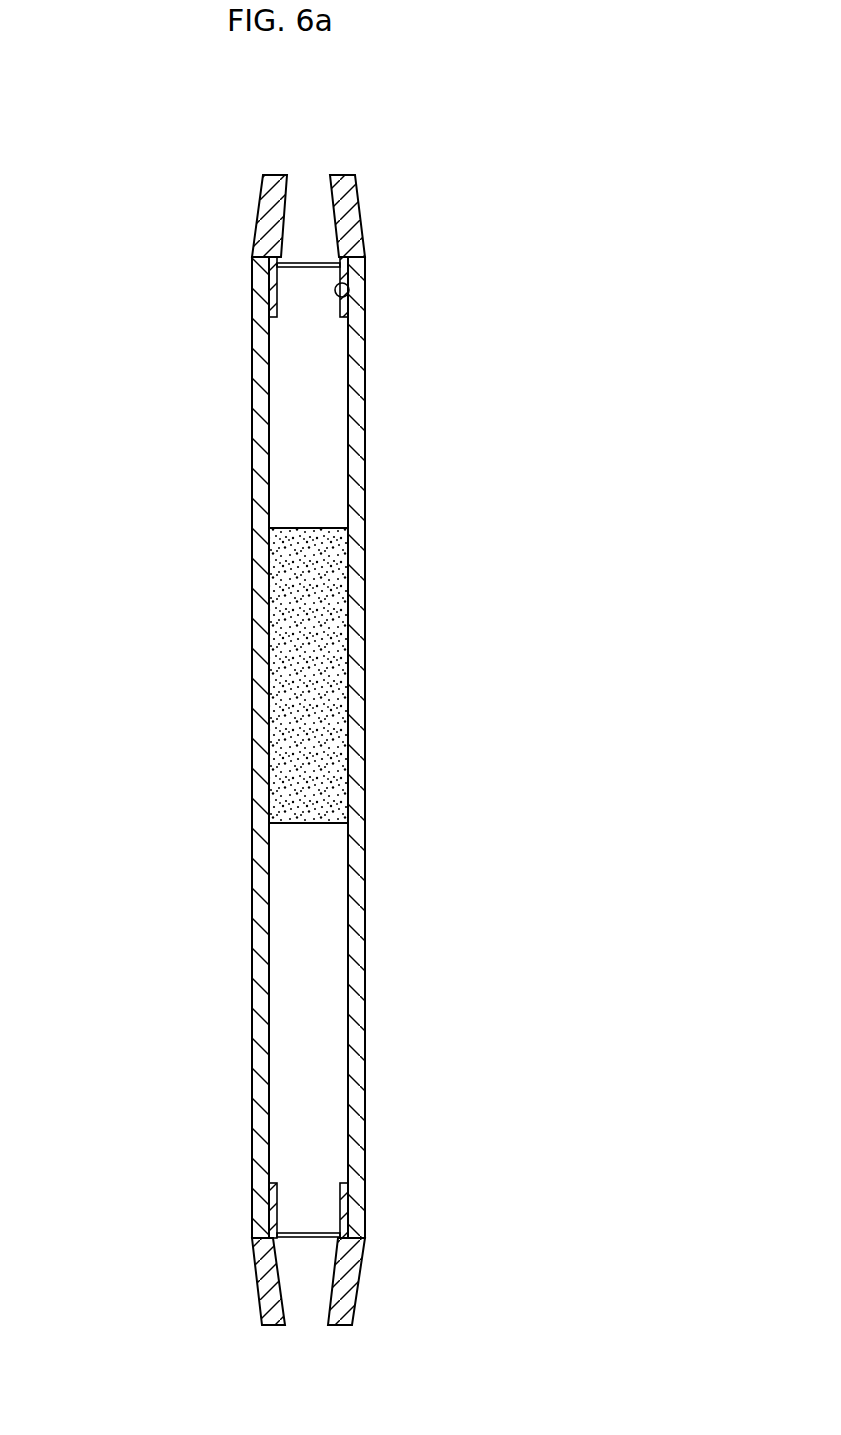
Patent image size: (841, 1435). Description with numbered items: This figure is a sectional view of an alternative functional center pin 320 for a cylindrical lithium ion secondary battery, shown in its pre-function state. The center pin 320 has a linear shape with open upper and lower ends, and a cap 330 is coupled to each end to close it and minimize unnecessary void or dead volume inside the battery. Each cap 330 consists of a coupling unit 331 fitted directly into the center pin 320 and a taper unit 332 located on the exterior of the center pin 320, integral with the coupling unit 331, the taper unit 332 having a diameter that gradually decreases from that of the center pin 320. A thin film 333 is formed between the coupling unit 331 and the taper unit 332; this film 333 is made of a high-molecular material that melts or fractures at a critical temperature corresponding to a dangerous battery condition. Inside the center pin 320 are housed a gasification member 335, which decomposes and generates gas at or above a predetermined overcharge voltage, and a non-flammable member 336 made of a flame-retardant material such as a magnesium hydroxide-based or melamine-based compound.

The center pin 320 is at (228, 465).
The cap 330 is at (317, 220).
The coupling unit 331 is at (348, 295).
The taper unit 332 is at (362, 212).
The thin film 333 is at (300, 263).
The gasification member 335 is at (210, 675).
The non-flammable member 336 is at (280, 640).